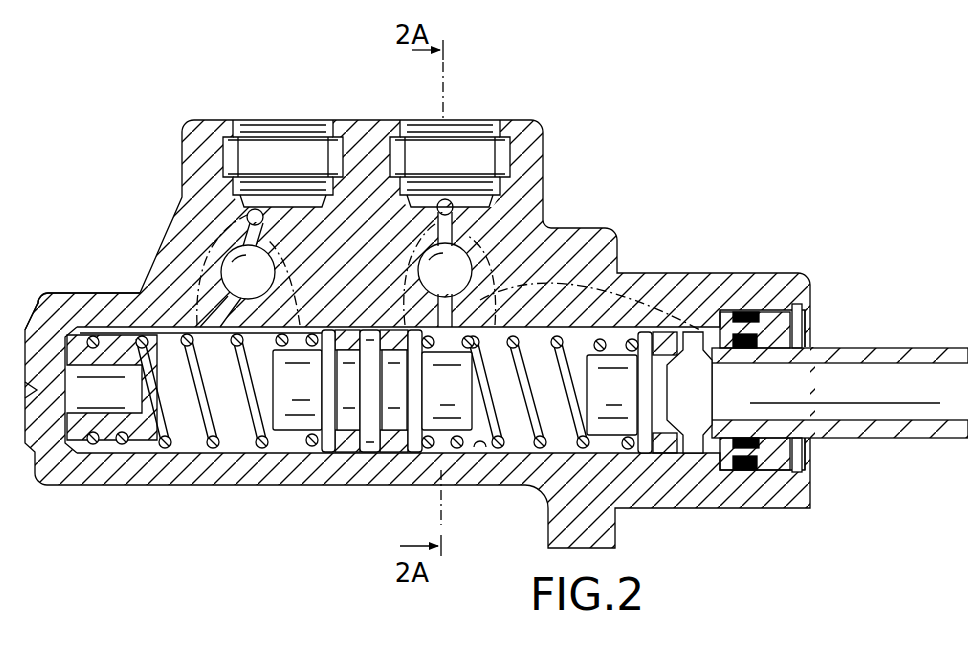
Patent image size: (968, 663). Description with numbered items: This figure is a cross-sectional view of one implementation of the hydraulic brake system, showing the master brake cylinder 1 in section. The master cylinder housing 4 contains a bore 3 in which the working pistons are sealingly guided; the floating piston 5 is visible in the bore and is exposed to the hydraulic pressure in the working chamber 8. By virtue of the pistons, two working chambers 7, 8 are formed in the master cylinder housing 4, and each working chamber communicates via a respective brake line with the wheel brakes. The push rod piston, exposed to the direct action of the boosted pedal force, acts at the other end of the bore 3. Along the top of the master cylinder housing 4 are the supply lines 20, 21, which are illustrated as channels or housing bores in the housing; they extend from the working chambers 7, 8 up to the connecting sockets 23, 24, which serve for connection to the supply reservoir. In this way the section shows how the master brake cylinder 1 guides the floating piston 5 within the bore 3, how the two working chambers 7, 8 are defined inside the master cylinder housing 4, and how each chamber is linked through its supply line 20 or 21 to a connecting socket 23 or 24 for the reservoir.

The master brake cylinder 1 is at (496, 334).
The bore 3 is at (480, 453).
The master cylinder housing 4 is at (138, 293).
The floating piston 5 is at (372, 433).
The working chamber 7 is at (185, 442).
The working chamber 8 is at (522, 440).
The supply line 20 is at (465, 218).
The supply line 21 is at (243, 228).
The connecting socket 23 is at (275, 150).
The connecting socket 24 is at (480, 150).